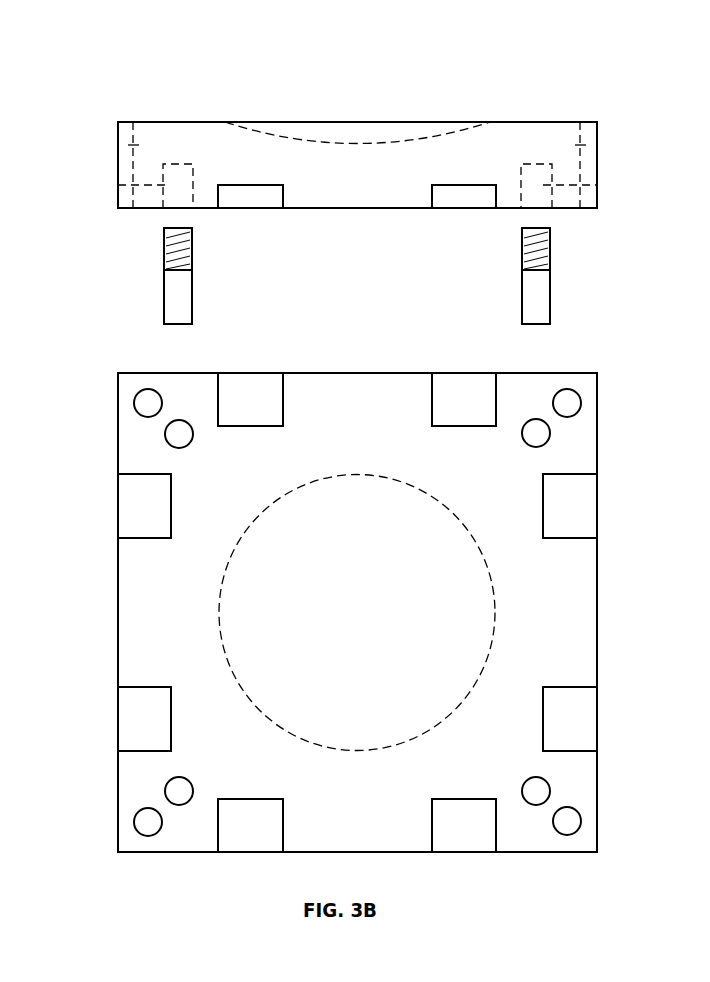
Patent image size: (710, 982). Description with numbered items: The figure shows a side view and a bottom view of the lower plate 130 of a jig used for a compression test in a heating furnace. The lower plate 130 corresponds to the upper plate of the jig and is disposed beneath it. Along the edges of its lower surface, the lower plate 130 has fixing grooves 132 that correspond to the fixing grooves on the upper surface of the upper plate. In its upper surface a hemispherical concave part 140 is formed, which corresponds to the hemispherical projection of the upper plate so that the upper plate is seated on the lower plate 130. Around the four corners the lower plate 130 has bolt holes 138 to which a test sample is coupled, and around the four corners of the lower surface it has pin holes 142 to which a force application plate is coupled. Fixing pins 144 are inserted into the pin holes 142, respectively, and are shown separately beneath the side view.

The lower plate 130 is at (681, 47).
The fixing grooves 132 is at (126, 186).
The bolt holes 138 is at (133, 145).
The hemispherical concave part 140 is at (355, 142).
The pin holes 142 is at (192, 185).
The fixing pins 144 is at (168, 291).